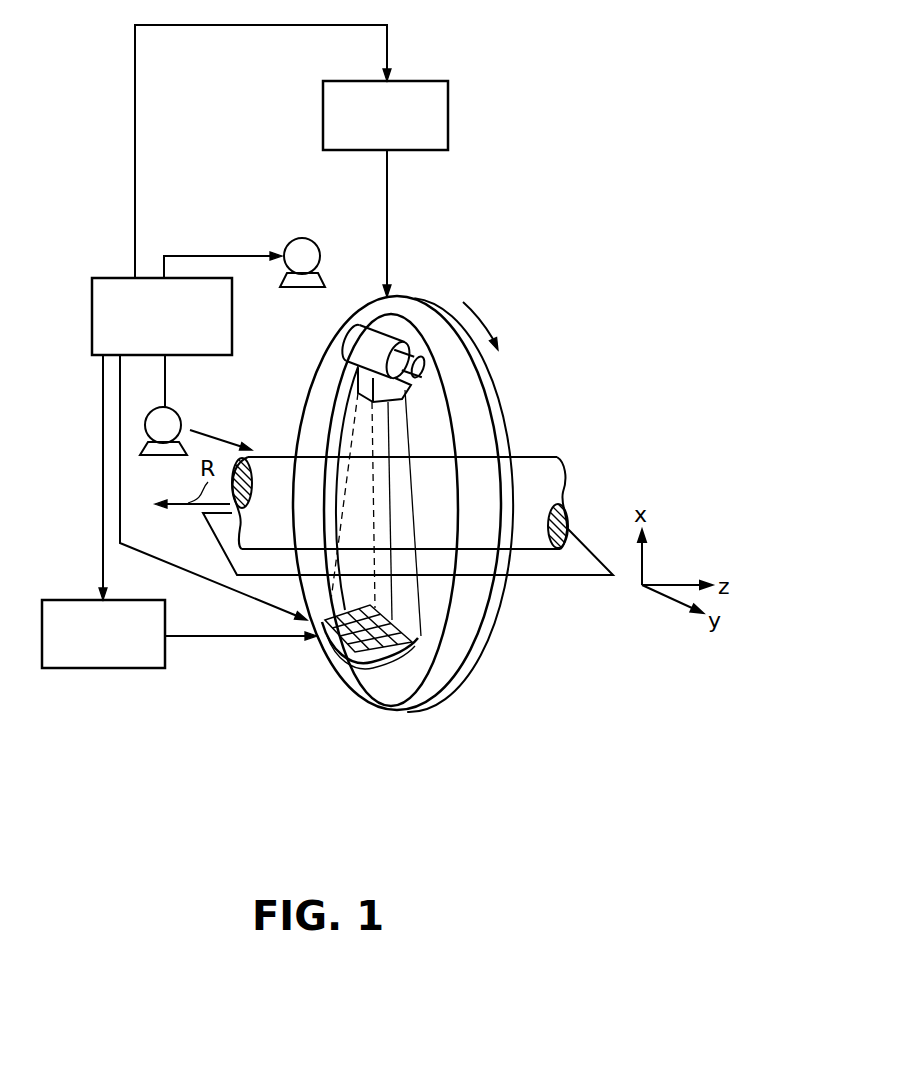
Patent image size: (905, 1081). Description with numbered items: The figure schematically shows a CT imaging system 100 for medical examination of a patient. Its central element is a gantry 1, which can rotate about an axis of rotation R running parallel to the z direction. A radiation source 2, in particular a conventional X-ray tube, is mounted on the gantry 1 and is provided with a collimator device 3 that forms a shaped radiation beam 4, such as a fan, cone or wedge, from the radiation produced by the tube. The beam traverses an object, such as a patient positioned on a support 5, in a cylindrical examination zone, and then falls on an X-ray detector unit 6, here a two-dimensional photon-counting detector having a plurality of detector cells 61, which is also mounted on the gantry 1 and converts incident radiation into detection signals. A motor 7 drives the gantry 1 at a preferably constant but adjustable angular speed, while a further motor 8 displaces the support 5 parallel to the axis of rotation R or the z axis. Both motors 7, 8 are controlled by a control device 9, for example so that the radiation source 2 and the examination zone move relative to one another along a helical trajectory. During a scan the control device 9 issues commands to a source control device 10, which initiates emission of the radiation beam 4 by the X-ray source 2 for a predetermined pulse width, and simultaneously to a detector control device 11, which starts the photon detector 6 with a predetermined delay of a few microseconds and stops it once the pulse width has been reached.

The CT imaging system 100 is at (634, 293).
The gantry 1 is at (453, 642).
The radiation source 2 is at (372, 338).
The collimator device 3 is at (400, 388).
The radiation beam 4 is at (407, 435).
The support 5 is at (223, 533).
The X-ray detector unit 6 is at (357, 655).
The detector cells 61 is at (317, 663).
The motor 7 is at (312, 240).
The further motor 8 is at (185, 418).
The control device 9 is at (107, 277).
The source control device 10 is at (448, 115).
The detector control device 11 is at (52, 598).